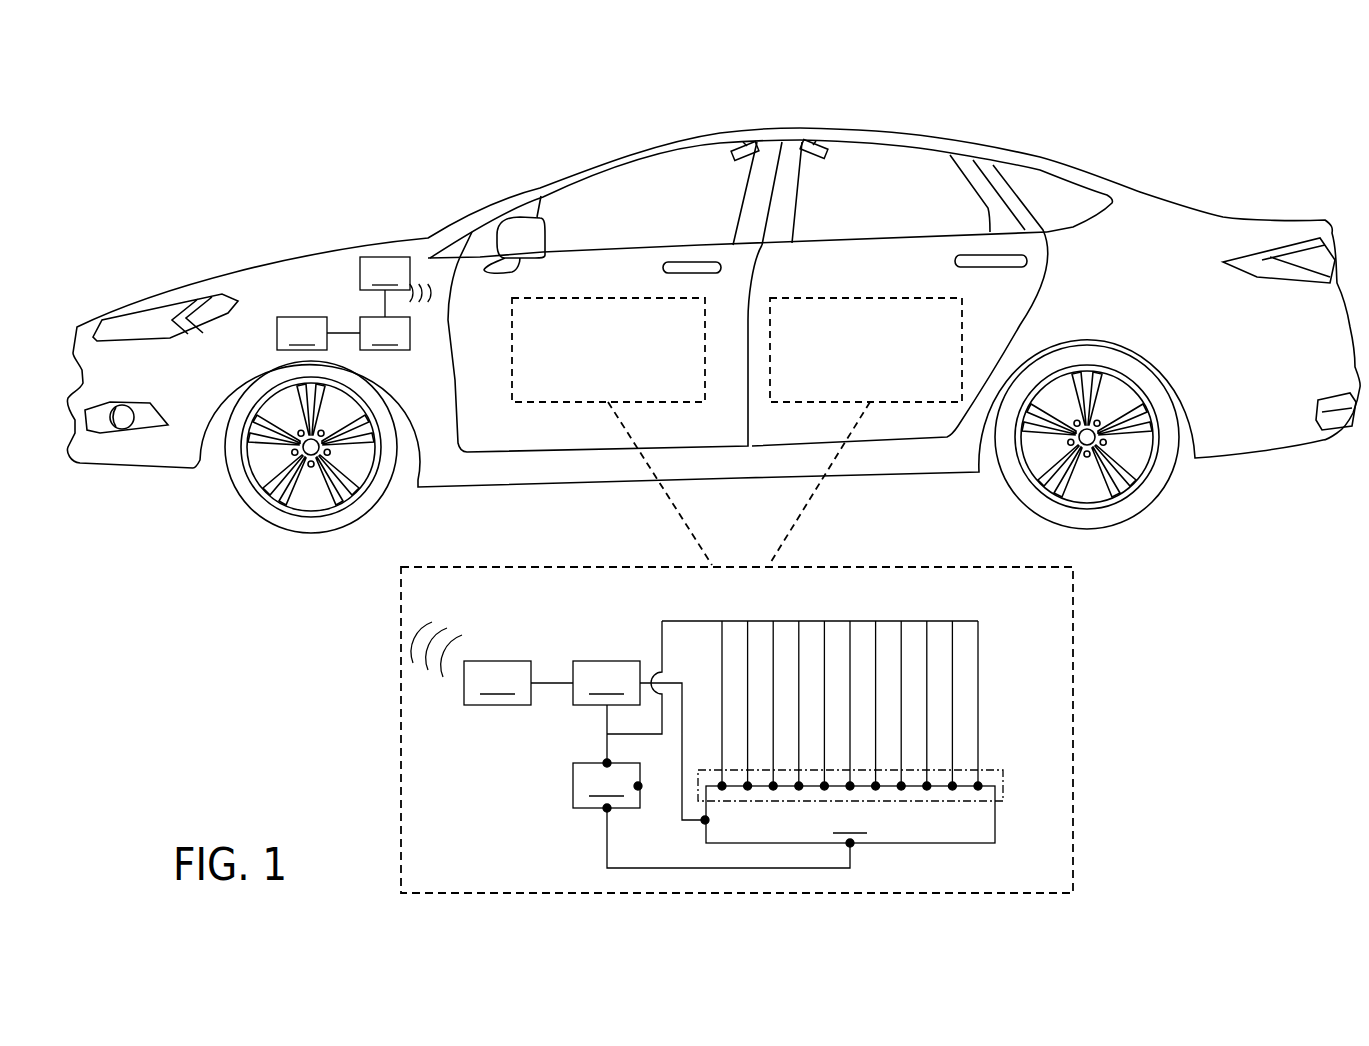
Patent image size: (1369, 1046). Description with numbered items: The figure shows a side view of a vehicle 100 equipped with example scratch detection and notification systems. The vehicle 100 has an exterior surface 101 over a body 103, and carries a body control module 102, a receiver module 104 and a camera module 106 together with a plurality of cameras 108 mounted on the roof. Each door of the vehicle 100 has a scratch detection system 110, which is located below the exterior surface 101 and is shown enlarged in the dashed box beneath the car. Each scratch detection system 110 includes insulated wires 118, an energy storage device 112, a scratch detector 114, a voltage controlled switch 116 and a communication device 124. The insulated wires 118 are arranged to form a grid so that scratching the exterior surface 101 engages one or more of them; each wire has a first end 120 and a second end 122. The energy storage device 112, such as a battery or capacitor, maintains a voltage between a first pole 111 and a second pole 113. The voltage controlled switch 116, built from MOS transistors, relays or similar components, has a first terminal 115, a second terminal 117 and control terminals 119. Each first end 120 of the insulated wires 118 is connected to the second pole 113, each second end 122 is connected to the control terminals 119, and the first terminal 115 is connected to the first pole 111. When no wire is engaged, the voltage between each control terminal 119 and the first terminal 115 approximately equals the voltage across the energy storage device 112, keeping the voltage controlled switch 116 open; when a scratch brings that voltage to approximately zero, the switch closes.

The vehicle 100 is at (1239, 195).
The exterior surface 101 is at (1167, 276).
The body control module 102 is at (368, 333).
The body 103 is at (1258, 411).
The receiver module 104 is at (395, 287).
The camera module 106 is at (302, 333).
The cameras 108 is at (743, 142).
The scratch detection system 110 is at (1090, 662).
The first pole 111 is at (605, 812).
The energy storage device 112 is at (607, 785).
The second pole 113 is at (605, 759).
The scratch detector 114 is at (639, 720).
The first terminal 115 is at (856, 850).
The voltage controlled switch 116 is at (850, 812).
The second terminal 117 is at (703, 824).
The insulated wires 118 is at (888, 694).
The control terminals 119 is at (985, 782).
The first end 120 is at (733, 618).
The second end 122 is at (980, 761).
The communication device 124 is at (518, 683).